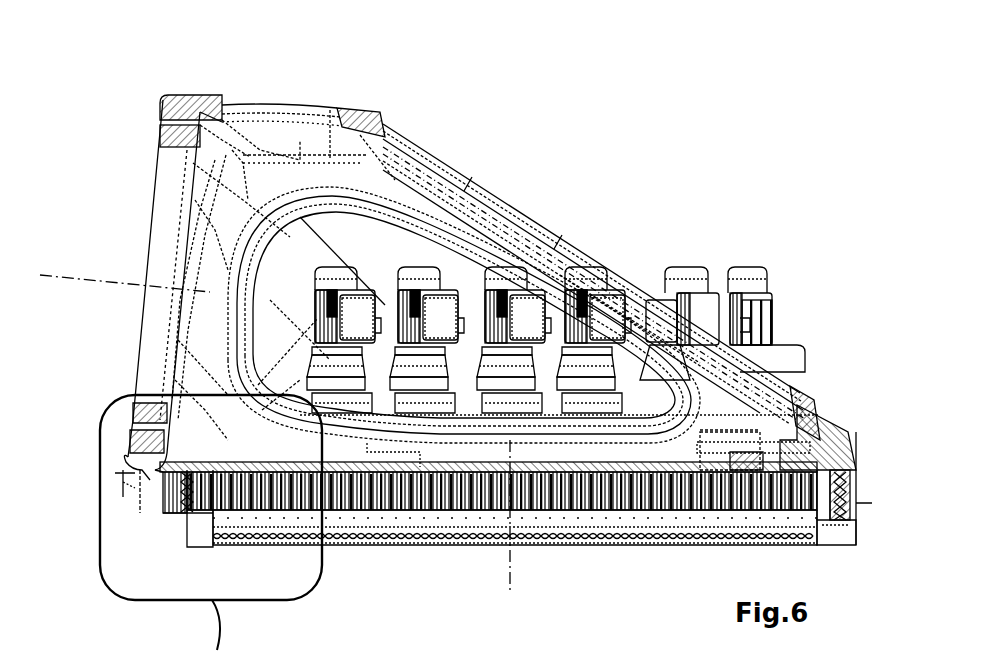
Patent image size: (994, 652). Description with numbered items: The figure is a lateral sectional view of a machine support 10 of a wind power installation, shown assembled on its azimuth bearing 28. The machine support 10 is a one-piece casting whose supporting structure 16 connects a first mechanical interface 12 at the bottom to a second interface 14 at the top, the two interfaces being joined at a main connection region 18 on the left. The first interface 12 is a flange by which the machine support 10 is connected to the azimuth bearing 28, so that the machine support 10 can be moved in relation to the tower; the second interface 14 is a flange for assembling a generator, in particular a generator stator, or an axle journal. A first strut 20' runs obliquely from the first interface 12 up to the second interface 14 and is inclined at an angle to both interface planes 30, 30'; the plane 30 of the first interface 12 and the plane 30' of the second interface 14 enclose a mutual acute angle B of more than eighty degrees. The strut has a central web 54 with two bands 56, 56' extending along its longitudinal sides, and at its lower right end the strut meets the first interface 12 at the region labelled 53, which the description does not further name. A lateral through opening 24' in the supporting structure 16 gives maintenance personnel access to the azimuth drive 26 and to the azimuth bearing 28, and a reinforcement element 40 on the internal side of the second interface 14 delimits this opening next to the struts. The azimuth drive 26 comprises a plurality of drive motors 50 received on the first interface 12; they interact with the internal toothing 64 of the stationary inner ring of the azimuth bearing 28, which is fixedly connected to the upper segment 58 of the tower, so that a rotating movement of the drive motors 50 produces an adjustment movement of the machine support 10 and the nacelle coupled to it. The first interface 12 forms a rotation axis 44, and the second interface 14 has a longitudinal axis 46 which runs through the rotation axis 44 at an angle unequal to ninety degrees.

The machine support 10 is at (490, 86).
The first mechanical interface 12 is at (255, 478).
The second interface 14 is at (155, 137).
The supporting structure 16 is at (330, 108).
The main connection region 18 is at (163, 462).
The first strut 20' is at (601, 282).
The lateral through opening 24' is at (524, 264).
The azimuth drive 26 is at (722, 242).
The azimuth bearing 28 is at (855, 514).
The plane of the first interface 30 is at (135, 509).
The plane of the second interface 30' is at (89, 468).
The reinforcement element 40 is at (218, 246).
The rotation axis 44 is at (512, 582).
The longitudinal axis 46 is at (100, 276).
The drive motors 50 is at (756, 282).
The corner block 53 is at (815, 432).
The central web 54 is at (493, 222).
The band 56 is at (590, 267).
The band 56' is at (630, 278).
The upper segment of the tower 58 is at (835, 535).
The internal toothing 64 is at (462, 500).
The acute angle β B is at (118, 452).